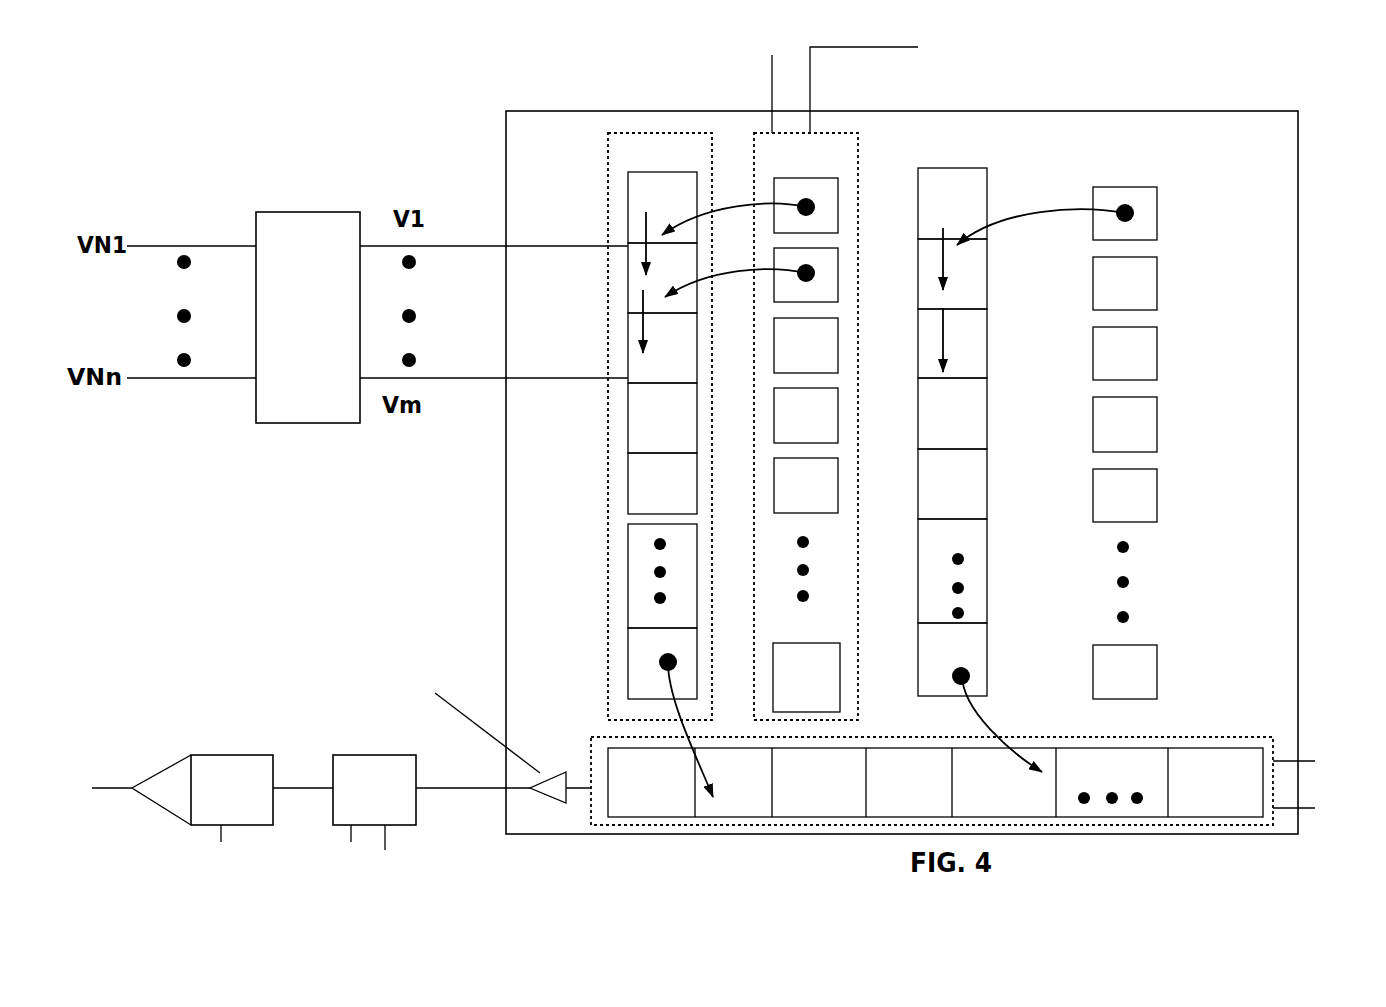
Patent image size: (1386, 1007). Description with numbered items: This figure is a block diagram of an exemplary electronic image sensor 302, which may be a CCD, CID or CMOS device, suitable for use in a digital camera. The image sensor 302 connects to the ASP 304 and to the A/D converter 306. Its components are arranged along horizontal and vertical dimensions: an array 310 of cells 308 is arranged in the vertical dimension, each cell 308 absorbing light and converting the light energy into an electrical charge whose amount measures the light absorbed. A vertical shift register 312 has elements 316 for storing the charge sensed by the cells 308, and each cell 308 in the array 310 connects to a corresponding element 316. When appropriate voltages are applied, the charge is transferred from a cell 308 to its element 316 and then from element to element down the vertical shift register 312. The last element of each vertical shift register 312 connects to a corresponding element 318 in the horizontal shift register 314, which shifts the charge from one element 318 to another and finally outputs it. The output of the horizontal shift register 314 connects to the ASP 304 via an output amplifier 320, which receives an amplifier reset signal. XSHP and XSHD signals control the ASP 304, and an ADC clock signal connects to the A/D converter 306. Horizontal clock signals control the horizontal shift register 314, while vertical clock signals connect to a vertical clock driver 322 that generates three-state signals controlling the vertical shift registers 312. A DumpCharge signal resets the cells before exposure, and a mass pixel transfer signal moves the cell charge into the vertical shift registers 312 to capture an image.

The image sensor 302 is at (1278, 111).
The ASP 304 is at (353, 755).
The A/D converter 306 is at (192, 755).
The cell 308 is at (825, 177).
The array of cells 310 is at (858, 177).
The vertical shift register 312 is at (667, 133).
The horizontal shift register 314 is at (977, 806).
The element 316 is at (608, 198).
The element 318 is at (740, 817).
The output amplifier 320 is at (552, 805).
The vertical clock driver 322 is at (310, 208).